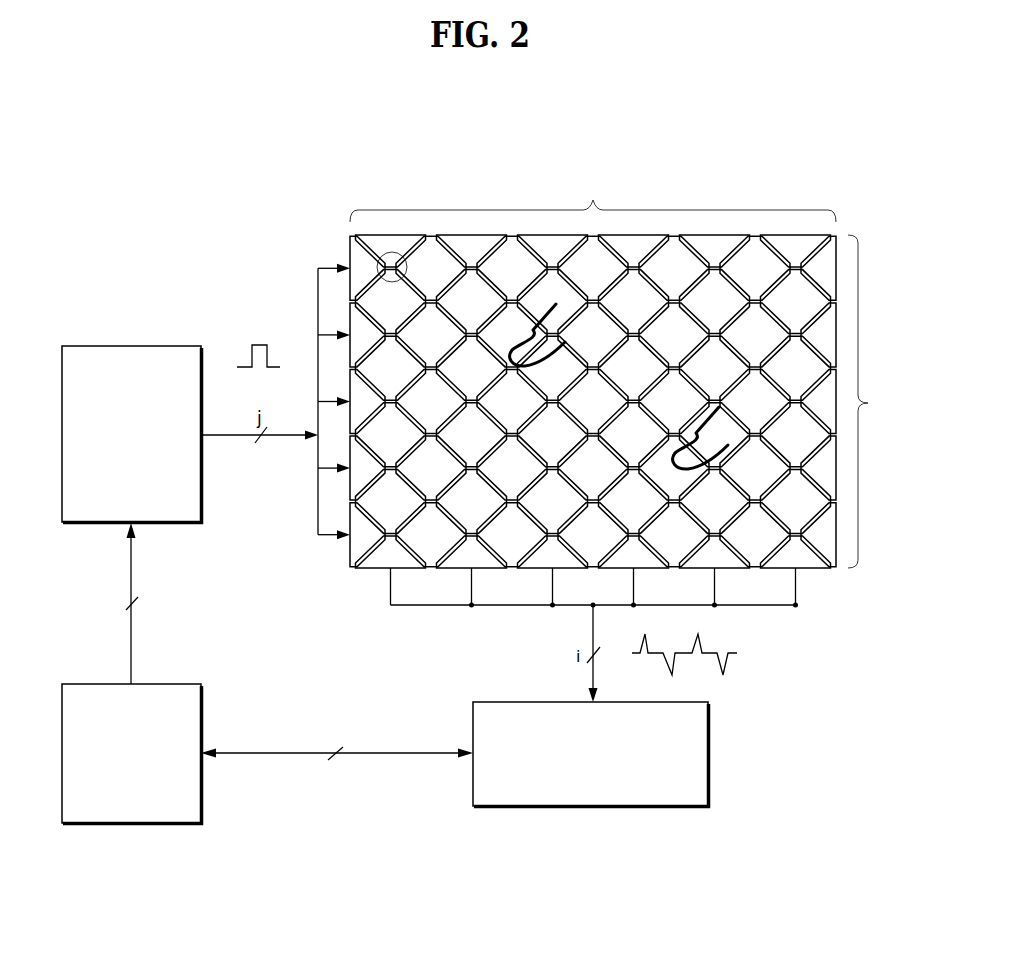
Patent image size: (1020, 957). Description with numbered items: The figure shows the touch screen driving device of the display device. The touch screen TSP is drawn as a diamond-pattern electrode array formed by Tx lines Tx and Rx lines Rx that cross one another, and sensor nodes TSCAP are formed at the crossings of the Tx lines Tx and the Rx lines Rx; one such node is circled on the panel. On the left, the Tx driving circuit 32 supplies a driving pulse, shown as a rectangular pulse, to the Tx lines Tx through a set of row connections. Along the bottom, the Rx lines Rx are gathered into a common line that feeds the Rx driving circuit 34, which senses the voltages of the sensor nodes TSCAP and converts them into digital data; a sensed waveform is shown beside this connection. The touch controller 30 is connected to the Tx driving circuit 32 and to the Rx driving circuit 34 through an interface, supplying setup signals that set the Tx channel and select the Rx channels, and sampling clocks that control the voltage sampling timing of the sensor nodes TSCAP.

The touch controller 30 is at (120, 765).
The Tx driving circuit 32 is at (120, 449).
The Rx driving circuit 34 is at (579, 765).
The touch screen TSP is at (738, 172).
The sensor nodes TSCAP is at (377, 264).
The Tx lines Tx is at (871, 401).
The Rx lines Rx is at (593, 196).